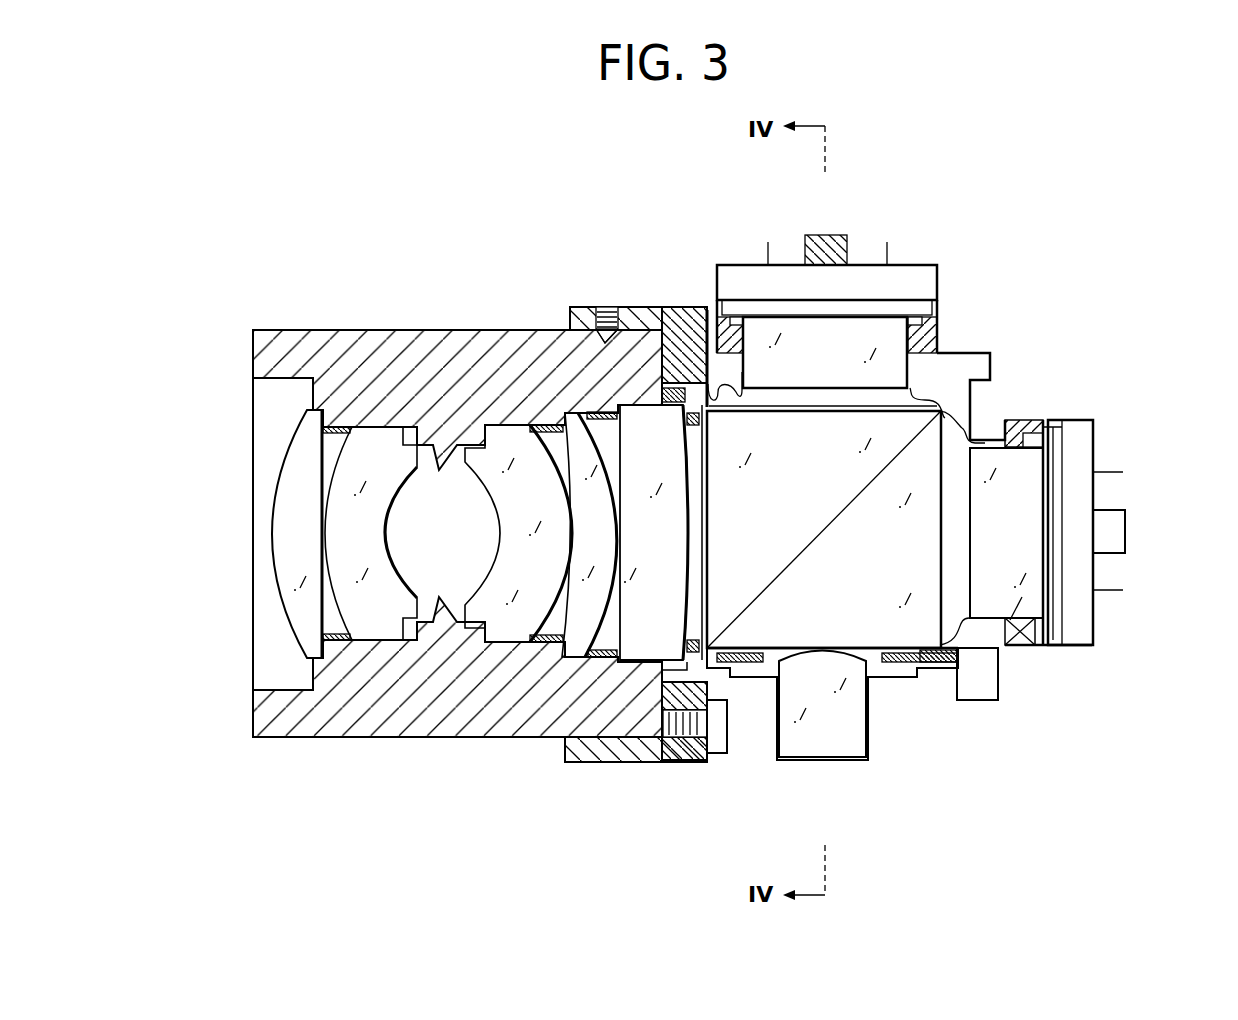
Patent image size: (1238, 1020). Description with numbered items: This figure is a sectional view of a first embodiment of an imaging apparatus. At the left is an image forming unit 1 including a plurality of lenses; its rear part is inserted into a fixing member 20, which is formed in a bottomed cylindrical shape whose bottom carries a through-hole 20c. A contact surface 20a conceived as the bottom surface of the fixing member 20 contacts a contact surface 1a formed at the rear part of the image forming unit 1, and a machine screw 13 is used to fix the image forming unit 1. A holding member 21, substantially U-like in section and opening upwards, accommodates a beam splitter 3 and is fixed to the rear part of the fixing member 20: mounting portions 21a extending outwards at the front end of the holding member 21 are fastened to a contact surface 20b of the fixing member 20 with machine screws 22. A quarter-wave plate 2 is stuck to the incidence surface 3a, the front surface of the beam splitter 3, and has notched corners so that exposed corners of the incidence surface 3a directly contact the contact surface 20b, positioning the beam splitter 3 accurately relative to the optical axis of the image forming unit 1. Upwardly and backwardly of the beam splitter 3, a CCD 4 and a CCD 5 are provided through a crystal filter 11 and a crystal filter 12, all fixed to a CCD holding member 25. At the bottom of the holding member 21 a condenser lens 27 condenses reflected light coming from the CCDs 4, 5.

The image forming unit 1 is at (316, 722).
The contact surface 1a is at (668, 330).
The quarter-wave plate 2 is at (668, 762).
The beam splitter 3 is at (748, 640).
The incidence surface 3a is at (705, 605).
The CCD 4 is at (918, 265).
The CCD 5 is at (1085, 453).
The crystal filter 11 is at (903, 377).
The crystal filter 12 is at (1033, 648).
The machine screw 13 is at (607, 306).
The fixing member 20 is at (597, 763).
The contact surface 20a is at (603, 336).
The contact surface 20b is at (712, 308).
The through-hole 20c is at (662, 398).
The holding member 21 is at (947, 660).
The mounting portion 21a is at (700, 762).
The machine screw 22 is at (722, 752).
The CCD holding member 25 is at (940, 333).
The condenser lens 27 is at (860, 738).